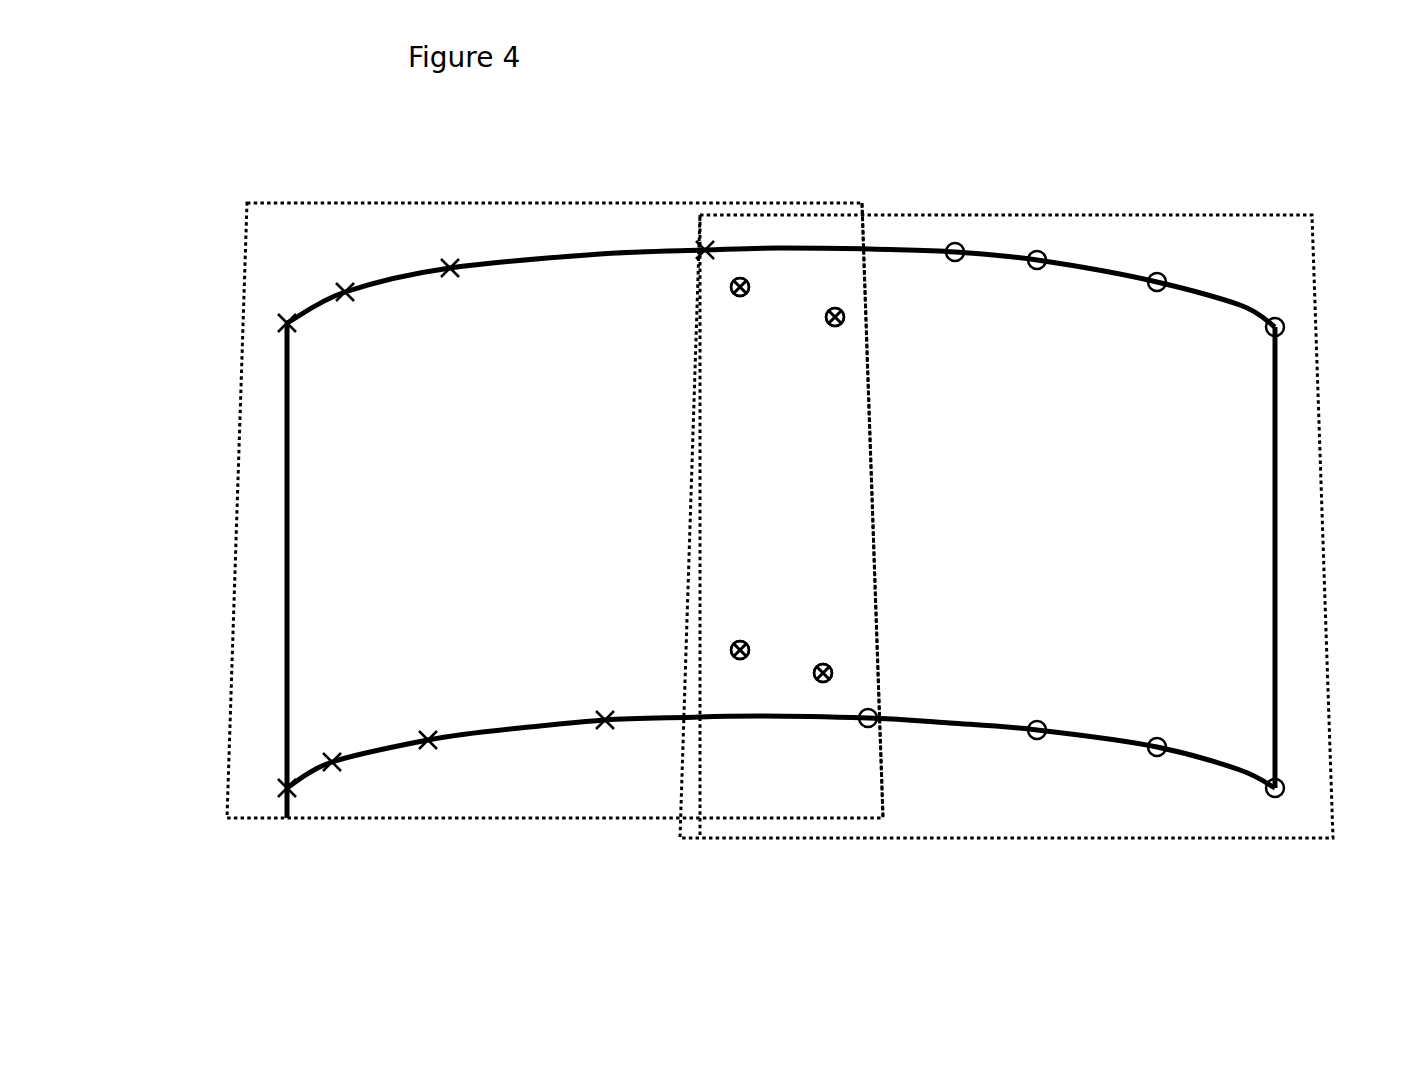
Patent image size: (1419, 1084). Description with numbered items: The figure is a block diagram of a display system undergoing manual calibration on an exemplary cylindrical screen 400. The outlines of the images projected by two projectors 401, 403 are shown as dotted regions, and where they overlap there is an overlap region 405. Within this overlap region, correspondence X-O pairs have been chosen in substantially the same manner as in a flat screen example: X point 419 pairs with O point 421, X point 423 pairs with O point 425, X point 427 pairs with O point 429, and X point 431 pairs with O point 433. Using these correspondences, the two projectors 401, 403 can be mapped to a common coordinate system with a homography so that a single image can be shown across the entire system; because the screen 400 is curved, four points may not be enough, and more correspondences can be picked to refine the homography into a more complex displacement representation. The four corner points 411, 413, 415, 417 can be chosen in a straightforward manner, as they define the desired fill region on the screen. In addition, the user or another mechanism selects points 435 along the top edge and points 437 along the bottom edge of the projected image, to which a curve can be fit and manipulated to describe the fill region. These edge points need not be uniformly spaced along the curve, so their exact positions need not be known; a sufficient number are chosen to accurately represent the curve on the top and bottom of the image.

The cylindrical screen 400 is at (586, 750).
The first projector 401 is at (340, 185).
The second projector 403 is at (1083, 198).
The overlap region 405 is at (857, 192).
The corner point 411 is at (264, 801).
The corner point 413 is at (255, 301).
The corner point 415 is at (1285, 296).
The corner point 417 is at (1300, 799).
The X correspondence point 419 is at (740, 694).
The O correspondence point 421 is at (738, 682).
The X correspondence point 423 is at (851, 710).
The O correspondence point 425 is at (845, 700).
The X correspondence point 427 is at (725, 256).
The O correspondence point 429 is at (735, 262).
The X correspondence point 431 is at (842, 288).
The O correspondence point 433 is at (840, 300).
The edge points 435 is at (578, 697).
The edge points 437 is at (1140, 699).